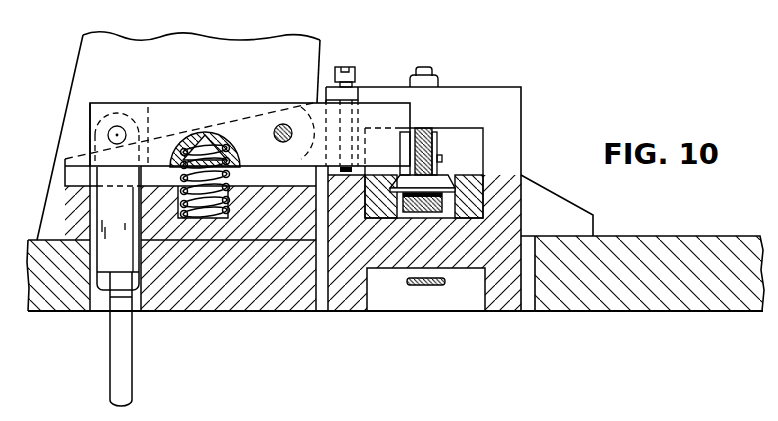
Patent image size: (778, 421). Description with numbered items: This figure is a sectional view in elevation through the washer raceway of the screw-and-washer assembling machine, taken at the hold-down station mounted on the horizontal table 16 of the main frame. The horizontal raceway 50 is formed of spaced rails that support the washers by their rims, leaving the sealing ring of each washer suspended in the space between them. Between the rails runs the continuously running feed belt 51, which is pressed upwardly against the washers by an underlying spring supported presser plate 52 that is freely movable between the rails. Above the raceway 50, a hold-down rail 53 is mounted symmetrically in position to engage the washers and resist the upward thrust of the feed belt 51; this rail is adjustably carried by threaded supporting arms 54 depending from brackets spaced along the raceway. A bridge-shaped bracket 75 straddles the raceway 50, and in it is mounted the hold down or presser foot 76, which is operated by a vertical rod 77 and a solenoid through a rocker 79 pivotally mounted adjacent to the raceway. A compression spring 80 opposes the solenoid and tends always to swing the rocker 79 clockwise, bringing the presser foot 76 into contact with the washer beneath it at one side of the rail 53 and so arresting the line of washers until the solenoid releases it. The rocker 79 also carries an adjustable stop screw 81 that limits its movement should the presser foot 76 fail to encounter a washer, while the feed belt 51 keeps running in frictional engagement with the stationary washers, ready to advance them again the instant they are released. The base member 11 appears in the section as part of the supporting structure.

The frame plate 11 is at (445, 175).
The horizontal table 16 is at (672, 302).
The horizontal raceway 50 is at (473, 178).
The feed belt 51 is at (400, 200).
The presser plate 52 is at (430, 200).
The hold-down rail 53 is at (432, 148).
The threaded supporting arms 54 is at (423, 68).
The bridge-shaped bracket 75 is at (512, 110).
The presser foot 76 is at (400, 137).
The vertical rod 77 is at (122, 372).
The rocker 79 is at (173, 112).
The compression spring 80 is at (208, 220).
The stop screw 81 is at (340, 65).